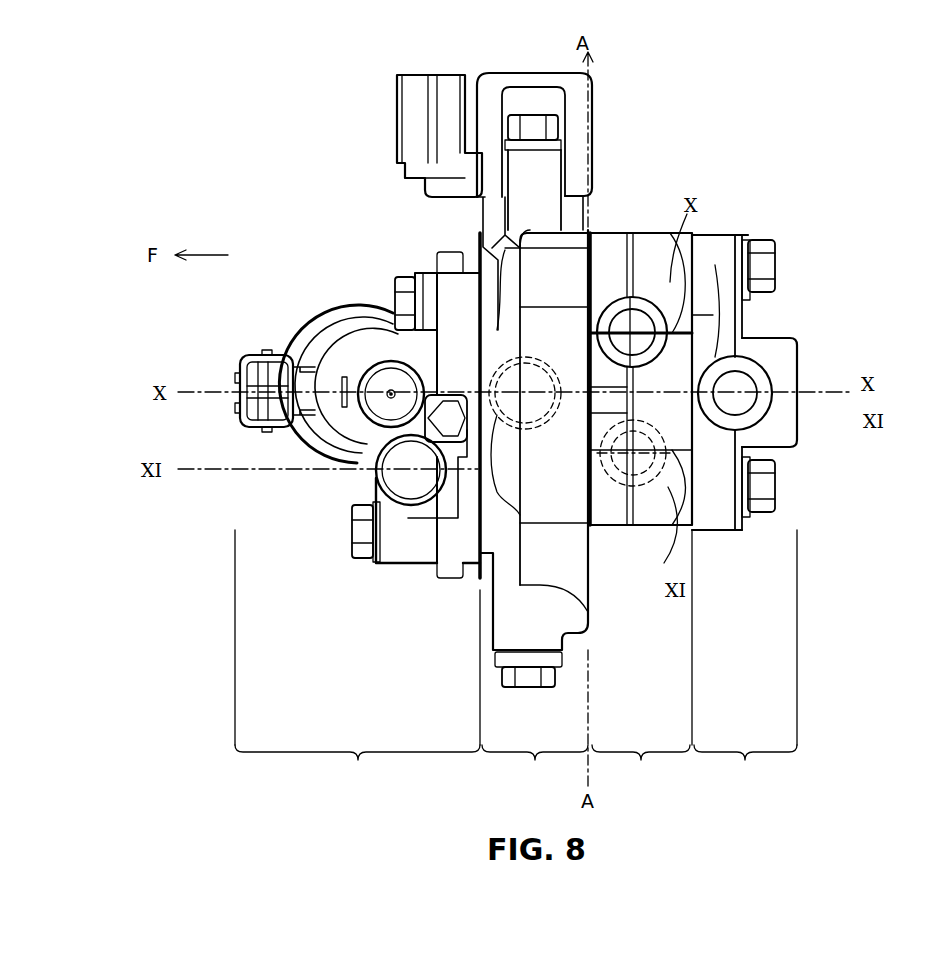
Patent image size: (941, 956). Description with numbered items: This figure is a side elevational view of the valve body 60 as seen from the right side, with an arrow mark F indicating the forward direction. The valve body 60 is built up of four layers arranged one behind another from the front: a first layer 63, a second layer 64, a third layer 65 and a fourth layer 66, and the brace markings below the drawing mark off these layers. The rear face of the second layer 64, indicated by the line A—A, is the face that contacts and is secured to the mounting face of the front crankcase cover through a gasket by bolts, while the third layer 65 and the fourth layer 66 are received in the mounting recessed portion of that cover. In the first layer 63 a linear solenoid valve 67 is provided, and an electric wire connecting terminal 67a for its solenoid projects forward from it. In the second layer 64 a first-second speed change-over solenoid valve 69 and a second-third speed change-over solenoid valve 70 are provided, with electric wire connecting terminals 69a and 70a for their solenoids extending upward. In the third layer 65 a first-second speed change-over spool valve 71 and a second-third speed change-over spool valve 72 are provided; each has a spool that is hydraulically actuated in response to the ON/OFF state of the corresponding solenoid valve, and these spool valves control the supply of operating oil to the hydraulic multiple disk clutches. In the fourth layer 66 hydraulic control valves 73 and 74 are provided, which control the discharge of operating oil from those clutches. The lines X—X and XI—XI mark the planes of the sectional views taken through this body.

The valve body 60 is at (833, 102).
The first layer 63 is at (356, 511).
The second layer 64 is at (459, 416).
The third layer 65 is at (641, 453).
The fourth layer 66 is at (797, 512).
The linear solenoid valve 67 is at (356, 312).
The electric wire connecting terminal 67a is at (257, 355).
The first-second speed change-over solenoid valve 69 is at (535, 73).
The second-third speed change-over solenoid valve 70 is at (534, 201).
The electric wire connecting terminal 69a is at (397, 95).
The electric wire connecting terminal 70a is at (439, 136).
The first-second speed change-over spool valve 71 is at (646, 297).
The second-third speed change-over spool valve 72 is at (625, 482).
The hydraulic control valve 73 is at (747, 392).
The hydraulic control valve 74 is at (761, 364).